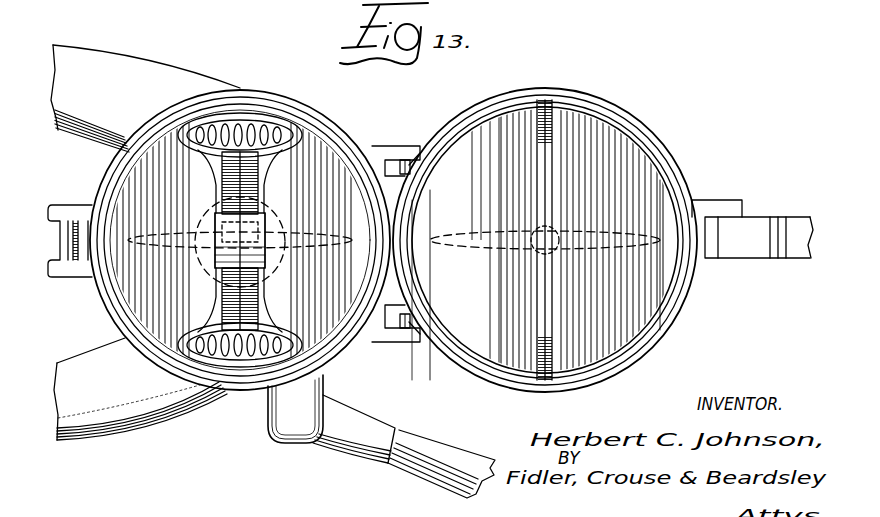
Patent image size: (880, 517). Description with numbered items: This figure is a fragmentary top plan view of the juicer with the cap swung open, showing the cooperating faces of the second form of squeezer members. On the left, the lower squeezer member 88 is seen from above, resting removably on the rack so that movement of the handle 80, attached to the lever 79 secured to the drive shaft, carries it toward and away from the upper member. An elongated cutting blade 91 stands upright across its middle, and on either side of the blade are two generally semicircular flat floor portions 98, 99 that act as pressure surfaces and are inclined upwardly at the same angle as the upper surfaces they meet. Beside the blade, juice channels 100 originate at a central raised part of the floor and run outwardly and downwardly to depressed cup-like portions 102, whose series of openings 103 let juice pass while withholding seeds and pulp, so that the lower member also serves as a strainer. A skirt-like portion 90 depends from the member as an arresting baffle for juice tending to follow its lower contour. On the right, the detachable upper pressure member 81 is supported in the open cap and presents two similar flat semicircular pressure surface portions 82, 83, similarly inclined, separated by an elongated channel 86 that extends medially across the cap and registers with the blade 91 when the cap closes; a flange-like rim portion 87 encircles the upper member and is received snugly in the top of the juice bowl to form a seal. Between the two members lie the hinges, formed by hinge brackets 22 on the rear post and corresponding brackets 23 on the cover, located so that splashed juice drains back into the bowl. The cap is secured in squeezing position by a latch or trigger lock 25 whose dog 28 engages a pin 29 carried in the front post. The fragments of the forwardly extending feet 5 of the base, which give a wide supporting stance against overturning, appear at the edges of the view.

The feet 5 is at (72, 55).
The hinge brackets 22 is at (402, 160).
The brackets 23 is at (380, 146).
The latch or trigger lock 25 is at (800, 258).
The dog 28 is at (758, 265).
The pin 29 is at (64, 244).
The lever 79 is at (345, 440).
The handle 80 is at (436, 465).
The upper pressure member 81 is at (635, 335).
The pressure surface portion 82 is at (495, 130).
The pressure surface portion 83 is at (598, 136).
The channel 86 is at (546, 105).
The flange-like rim portion 87 is at (660, 152).
The lower squeezer member 88 is at (330, 135).
The skirt-like portion 90 is at (195, 210).
The cutting blade 91 is at (150, 295).
The flat floor portion 98 is at (327, 304).
The flat floor portion 99 is at (148, 280).
The juice channels 100 is at (230, 172).
The cup-like portions 102 is at (195, 120).
The openings 103 is at (250, 125).